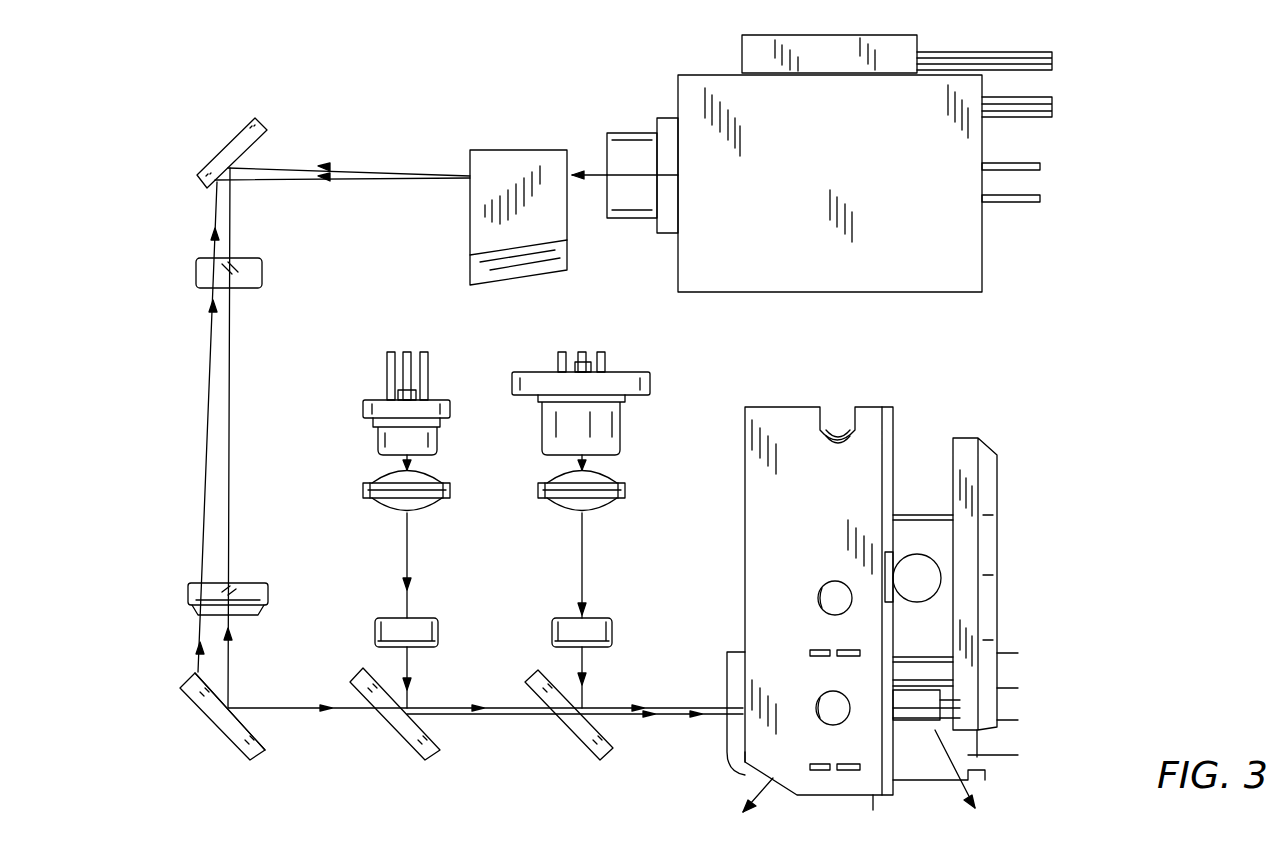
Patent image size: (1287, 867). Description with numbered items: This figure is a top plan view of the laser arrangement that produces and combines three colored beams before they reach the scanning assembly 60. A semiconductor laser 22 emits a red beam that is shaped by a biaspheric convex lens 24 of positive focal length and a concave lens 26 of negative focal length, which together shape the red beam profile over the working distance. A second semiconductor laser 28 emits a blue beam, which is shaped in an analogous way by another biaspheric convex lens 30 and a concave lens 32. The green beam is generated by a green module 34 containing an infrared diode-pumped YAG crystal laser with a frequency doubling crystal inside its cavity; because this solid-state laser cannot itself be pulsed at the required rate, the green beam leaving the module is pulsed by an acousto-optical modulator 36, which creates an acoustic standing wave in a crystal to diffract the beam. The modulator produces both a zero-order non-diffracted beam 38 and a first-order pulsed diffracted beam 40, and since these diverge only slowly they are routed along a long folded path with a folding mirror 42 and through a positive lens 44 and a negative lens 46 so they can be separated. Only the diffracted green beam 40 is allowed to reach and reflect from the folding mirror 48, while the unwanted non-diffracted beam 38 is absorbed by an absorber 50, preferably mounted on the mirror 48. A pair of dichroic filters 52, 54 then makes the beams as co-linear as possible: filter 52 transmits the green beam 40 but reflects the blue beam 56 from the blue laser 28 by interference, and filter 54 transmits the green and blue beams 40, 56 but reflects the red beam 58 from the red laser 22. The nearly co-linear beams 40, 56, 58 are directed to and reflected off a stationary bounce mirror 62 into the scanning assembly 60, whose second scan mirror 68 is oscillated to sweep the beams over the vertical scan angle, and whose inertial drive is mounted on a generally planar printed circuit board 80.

The semiconductor laser 22 is at (620, 434).
The lens 24 is at (627, 490).
The lens 26 is at (614, 630).
The semiconductor laser 28 is at (441, 443).
The biaspheric convex lens 30 is at (450, 490).
The concave lens 32 is at (440, 628).
The green module 34 is at (731, 292).
The acousto-optical modulator 36 is at (504, 285).
The zero-order, non-diffracted beam 38 is at (272, 186).
The first-order, pulsed, diffracted beam 40 is at (291, 167).
The folding mirror 42 is at (241, 125).
The positive lens 44 is at (262, 269).
The negative lens 46 is at (270, 592).
The folding mirror 48 is at (264, 739).
The absorber 50 is at (178, 707).
The dichroic filter 52 is at (438, 748).
The dichroic filter 54 is at (609, 743).
The blue beam 56 is at (407, 670).
The red beam 58 is at (584, 665).
The scanning assembly 60 is at (934, 426).
The stationary bounce mirror 62 is at (991, 497).
The second scan mirror 68 is at (926, 720).
The printed circuit board 80 is at (774, 422).